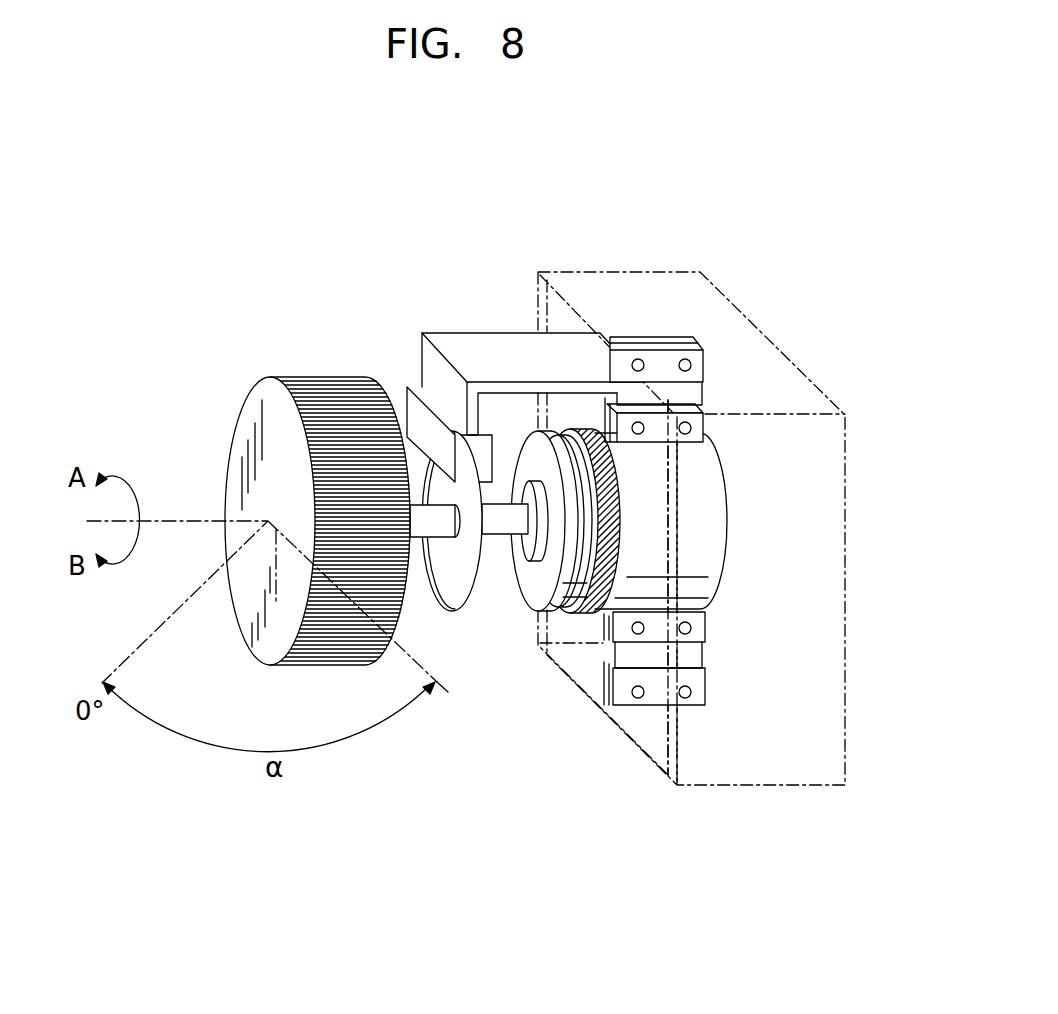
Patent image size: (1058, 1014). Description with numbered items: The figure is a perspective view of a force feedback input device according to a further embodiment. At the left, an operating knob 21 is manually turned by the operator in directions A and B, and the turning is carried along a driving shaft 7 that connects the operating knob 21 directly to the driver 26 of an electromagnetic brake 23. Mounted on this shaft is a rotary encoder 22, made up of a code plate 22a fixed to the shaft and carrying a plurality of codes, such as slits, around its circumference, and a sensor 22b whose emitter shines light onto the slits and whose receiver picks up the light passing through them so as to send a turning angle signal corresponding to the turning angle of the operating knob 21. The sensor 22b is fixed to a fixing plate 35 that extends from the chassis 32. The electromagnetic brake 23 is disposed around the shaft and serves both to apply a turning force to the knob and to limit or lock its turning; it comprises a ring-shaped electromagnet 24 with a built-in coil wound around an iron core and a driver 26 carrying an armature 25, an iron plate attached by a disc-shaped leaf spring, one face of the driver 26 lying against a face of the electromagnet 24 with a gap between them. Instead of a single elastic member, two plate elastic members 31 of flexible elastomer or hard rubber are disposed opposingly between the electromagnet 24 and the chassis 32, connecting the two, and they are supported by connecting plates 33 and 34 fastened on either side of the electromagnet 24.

The motor shaft 7 is at (500, 537).
The operating knob 21 is at (347, 410).
The rotary encoder 22 is at (491, 403).
The code plate 22a is at (448, 493).
The sensor 22b is at (428, 423).
The electromagnetic brake 23 is at (590, 649).
The electromagnet 24 is at (636, 604).
The armature 25 is at (568, 603).
The driver 26 is at (538, 593).
The plate elastic members 31 is at (702, 393).
The chassis 32 is at (802, 477).
The connecting plate 33 is at (690, 427).
The connecting plate 34 is at (690, 363).
The fixing plate 35 is at (485, 360).